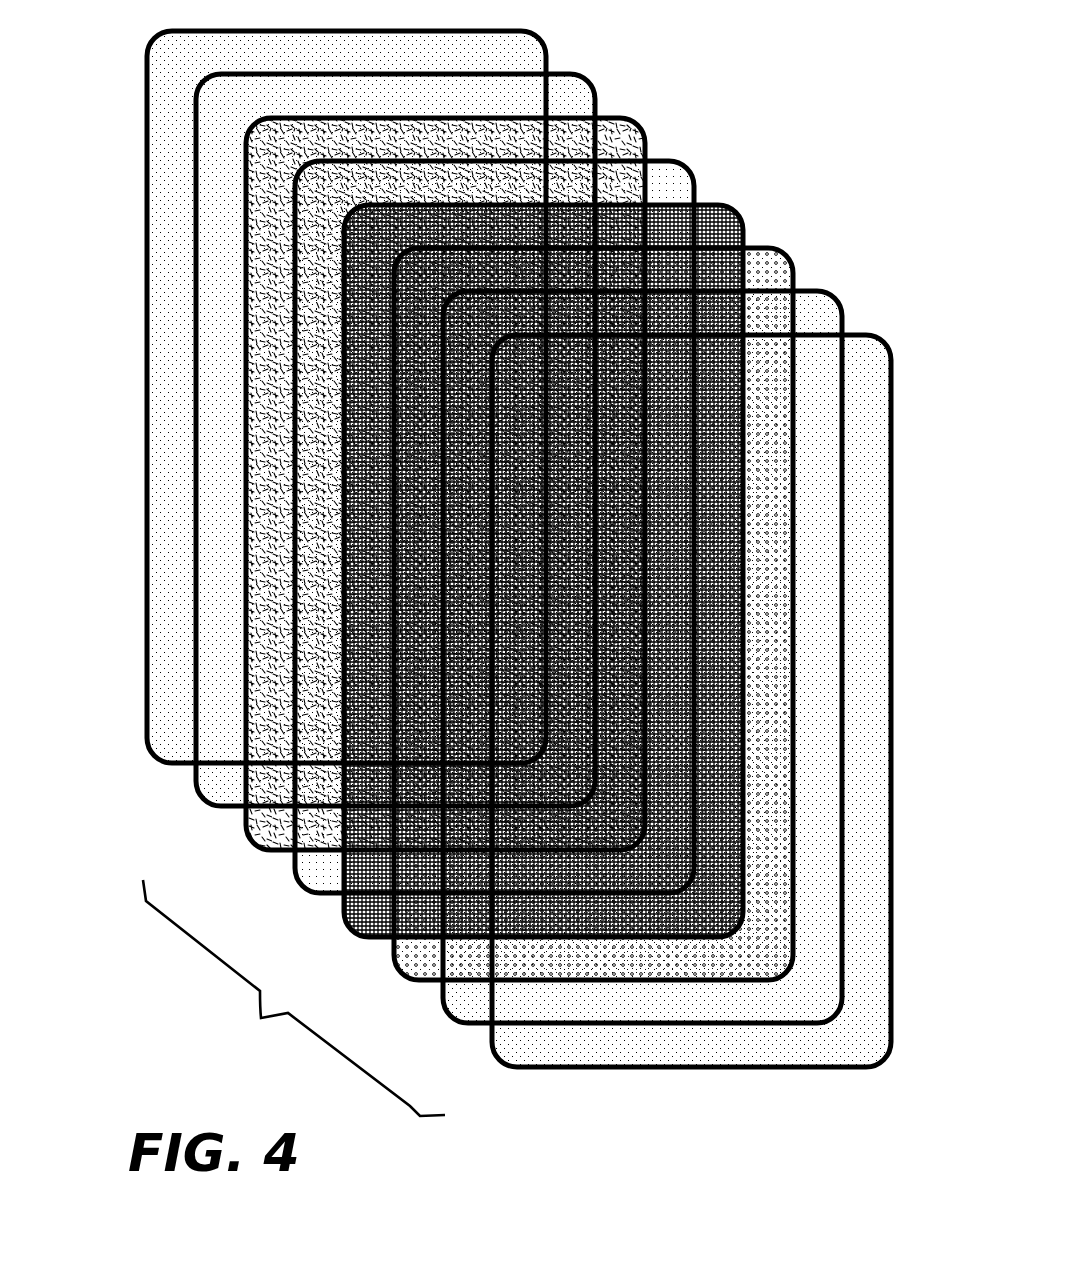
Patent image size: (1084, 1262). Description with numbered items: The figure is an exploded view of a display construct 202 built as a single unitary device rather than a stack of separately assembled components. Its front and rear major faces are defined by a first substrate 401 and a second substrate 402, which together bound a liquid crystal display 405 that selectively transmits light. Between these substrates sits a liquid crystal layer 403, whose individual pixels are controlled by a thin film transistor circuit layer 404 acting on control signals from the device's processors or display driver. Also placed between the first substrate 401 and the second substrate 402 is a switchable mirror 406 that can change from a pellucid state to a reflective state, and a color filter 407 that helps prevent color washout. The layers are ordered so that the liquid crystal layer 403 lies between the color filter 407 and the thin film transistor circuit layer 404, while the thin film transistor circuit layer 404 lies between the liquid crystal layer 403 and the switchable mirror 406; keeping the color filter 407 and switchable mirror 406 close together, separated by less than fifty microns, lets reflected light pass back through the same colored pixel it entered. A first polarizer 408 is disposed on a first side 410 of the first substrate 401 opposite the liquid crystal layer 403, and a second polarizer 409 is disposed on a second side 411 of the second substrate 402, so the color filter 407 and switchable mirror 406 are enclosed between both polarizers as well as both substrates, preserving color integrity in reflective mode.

The display construct 202 is at (795, 208).
The first substrate 401 is at (210, 783).
The second substrate 402 is at (463, 997).
The liquid crystal layer 403 is at (315, 867).
The thin film transistor circuit layer 404 is at (364, 925).
The liquid crystal display 405 is at (253, 1010).
The switchable mirror 406 is at (412, 957).
The color filter 407 is at (263, 828).
The first polarizer 408 is at (170, 742).
The second polarizer 409 is at (548, 1043).
The first side 410 is at (108, 390).
The second side 411 is at (949, 683).